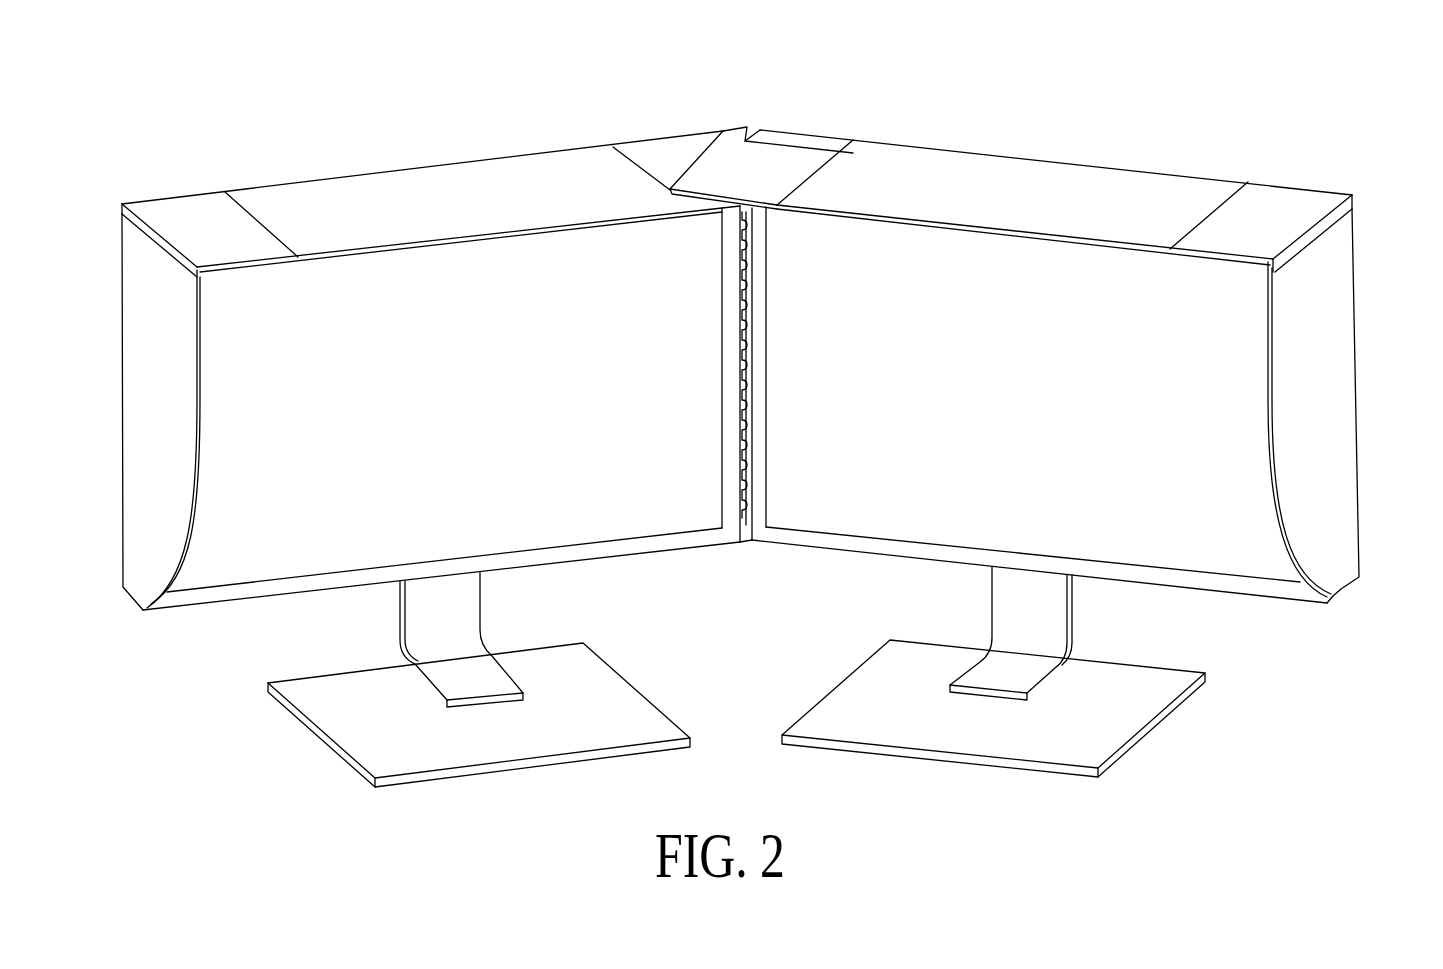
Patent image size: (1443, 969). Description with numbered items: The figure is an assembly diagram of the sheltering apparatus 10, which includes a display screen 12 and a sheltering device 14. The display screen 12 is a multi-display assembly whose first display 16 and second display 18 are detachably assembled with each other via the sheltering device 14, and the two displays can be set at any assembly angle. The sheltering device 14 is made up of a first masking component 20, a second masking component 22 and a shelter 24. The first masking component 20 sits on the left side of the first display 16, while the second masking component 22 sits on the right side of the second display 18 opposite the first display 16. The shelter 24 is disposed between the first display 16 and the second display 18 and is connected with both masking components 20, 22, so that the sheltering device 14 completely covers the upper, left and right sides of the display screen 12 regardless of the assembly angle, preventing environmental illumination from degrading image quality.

The sheltering apparatus 10 is at (1337, 98).
The display screen 12 is at (740, 440).
The sheltering device 14 is at (723, 290).
The first display 16 is at (252, 518).
The second display 18 is at (1235, 518).
The first masking component 20 is at (400, 203).
The second masking component 22 is at (1079, 203).
The shelter 24 is at (742, 165).